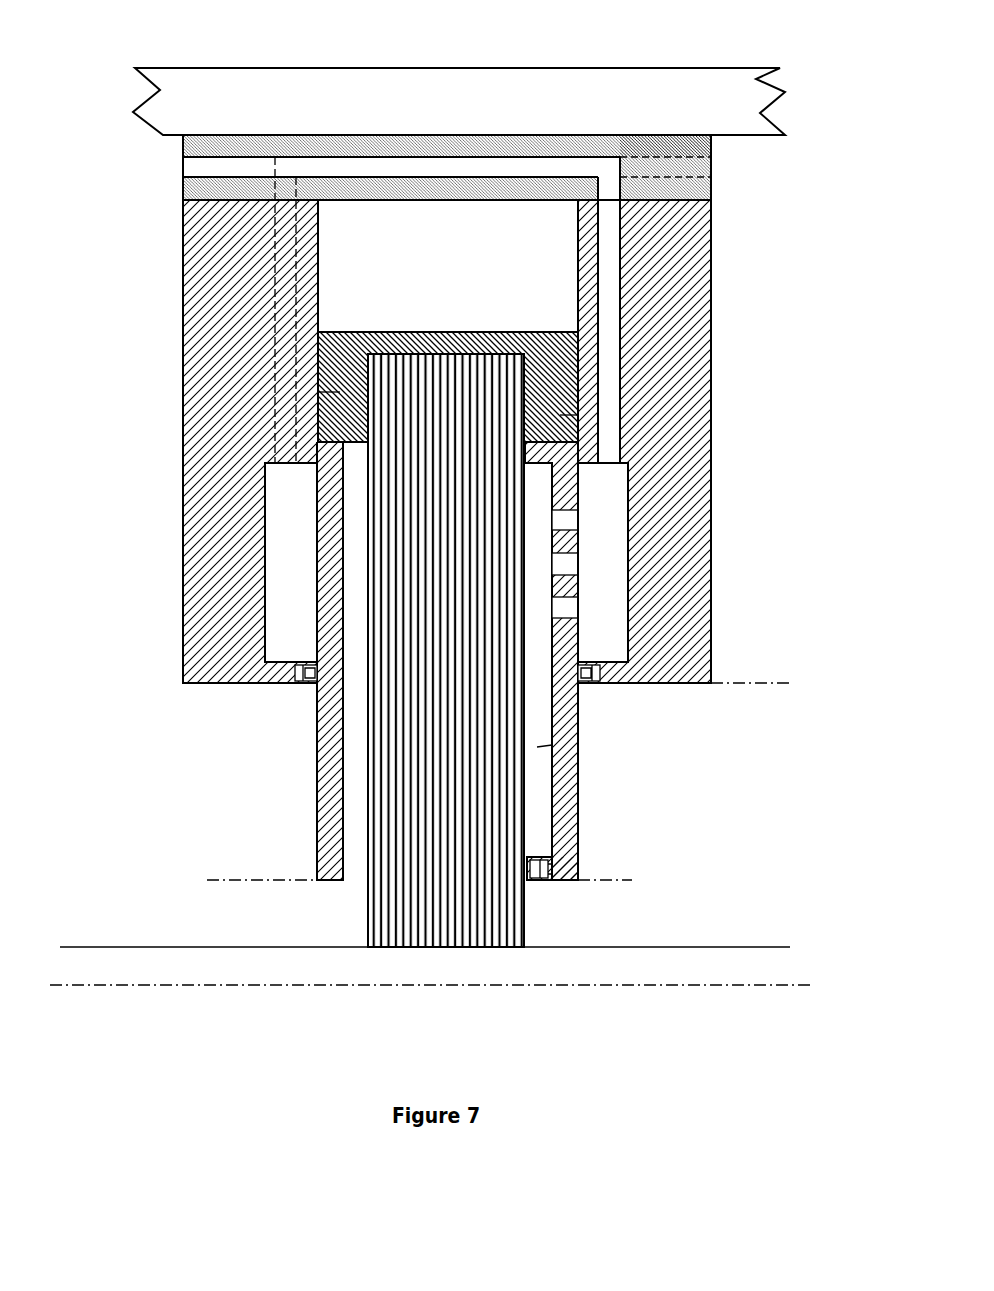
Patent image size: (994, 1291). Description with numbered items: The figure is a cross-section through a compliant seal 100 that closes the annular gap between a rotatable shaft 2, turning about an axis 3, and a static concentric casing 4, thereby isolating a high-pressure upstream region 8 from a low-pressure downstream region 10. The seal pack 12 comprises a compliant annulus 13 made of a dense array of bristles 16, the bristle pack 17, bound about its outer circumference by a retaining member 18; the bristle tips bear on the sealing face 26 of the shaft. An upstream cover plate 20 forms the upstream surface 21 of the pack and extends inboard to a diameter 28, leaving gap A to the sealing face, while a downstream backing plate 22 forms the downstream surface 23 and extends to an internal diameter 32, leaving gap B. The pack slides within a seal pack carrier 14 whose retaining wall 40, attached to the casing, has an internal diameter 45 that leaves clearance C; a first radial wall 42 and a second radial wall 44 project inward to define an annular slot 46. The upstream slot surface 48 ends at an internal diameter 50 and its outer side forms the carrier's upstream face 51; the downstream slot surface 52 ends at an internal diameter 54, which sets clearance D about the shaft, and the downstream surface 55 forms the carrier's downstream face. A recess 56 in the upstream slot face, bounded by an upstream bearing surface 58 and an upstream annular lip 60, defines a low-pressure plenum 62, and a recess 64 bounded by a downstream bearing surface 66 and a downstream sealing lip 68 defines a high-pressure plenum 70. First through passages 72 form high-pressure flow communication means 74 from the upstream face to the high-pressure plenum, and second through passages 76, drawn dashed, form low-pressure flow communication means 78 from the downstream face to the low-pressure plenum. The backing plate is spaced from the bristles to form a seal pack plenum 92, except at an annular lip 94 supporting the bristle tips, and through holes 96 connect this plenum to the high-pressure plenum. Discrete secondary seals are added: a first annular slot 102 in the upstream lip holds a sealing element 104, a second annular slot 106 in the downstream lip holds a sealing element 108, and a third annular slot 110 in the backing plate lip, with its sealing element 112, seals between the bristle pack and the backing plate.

The rotatable shaft 2 is at (670, 947).
The axis 3 is at (622, 987).
The casing 4 is at (752, 80).
The first upstream region 8 is at (106, 516).
The second downstream region 10 is at (818, 516).
The seal pack 12 is at (578, 840).
The compliant annulus 13 is at (372, 922).
The seal pack carrier 14 is at (711, 592).
The bristles 16 is at (370, 947).
The bristle pack 17 is at (420, 948).
The retaining member 18 is at (340, 392).
The upstream annular cover plate 20 is at (317, 853).
The upstream surface of seal pack 21 is at (317, 805).
The downstream annular backing plate 22 is at (578, 780).
The downstream surface of seal pack 23 is at (578, 810).
The sealing face 26 is at (478, 949).
The diameter of cover plate 28 is at (330, 885).
The internal diameter of backing plate 32 is at (555, 885).
The annular retaining wall 40 is at (711, 190).
The first radial wall 42 is at (200, 595).
The second radial wall 44 is at (711, 462).
The internal diameter of retaining wall 45 is at (392, 203).
The annular slot 46 is at (468, 222).
The upstream slot surface 48 is at (318, 315).
The internal diameter of first radial wall 50 is at (222, 688).
The upstream face of carrier 51 is at (183, 330).
The downstream slot surface 52 is at (578, 243).
The internal diameter of second radial wall 54 is at (700, 688).
The downstream surface of second radial wall 55 is at (711, 272).
The annular recess 56 is at (280, 612).
The upstream bearing surface 58 is at (340, 370).
The upstream annular lip 60 is at (300, 686).
The low-pressure plenum 62 is at (291, 562).
The annular recess 64 is at (618, 634).
The downstream bearing surface 66 is at (576, 393).
The downstream annular sealing lip 68 is at (622, 688).
The high-pressure plenum 70 is at (603, 562).
The first through passages 72 is at (258, 165).
The high-pressure flow communication means 74 is at (318, 165).
The second through passages 76 is at (633, 157).
The low-pressure flow communication means 78 is at (290, 265).
The seal pack plenum 92 is at (578, 740).
The annular lip 94 is at (532, 885).
The through holes 96 is at (570, 522).
The seal 100 is at (730, 375).
The first annular slot 102 is at (300, 672).
The annular sealing element 104 is at (300, 668).
The second annular slot 106 is at (711, 672).
The annular sealing element 108 is at (590, 668).
The third annular slot 110 is at (548, 862).
The bottom seal ring 112 is at (548, 870).